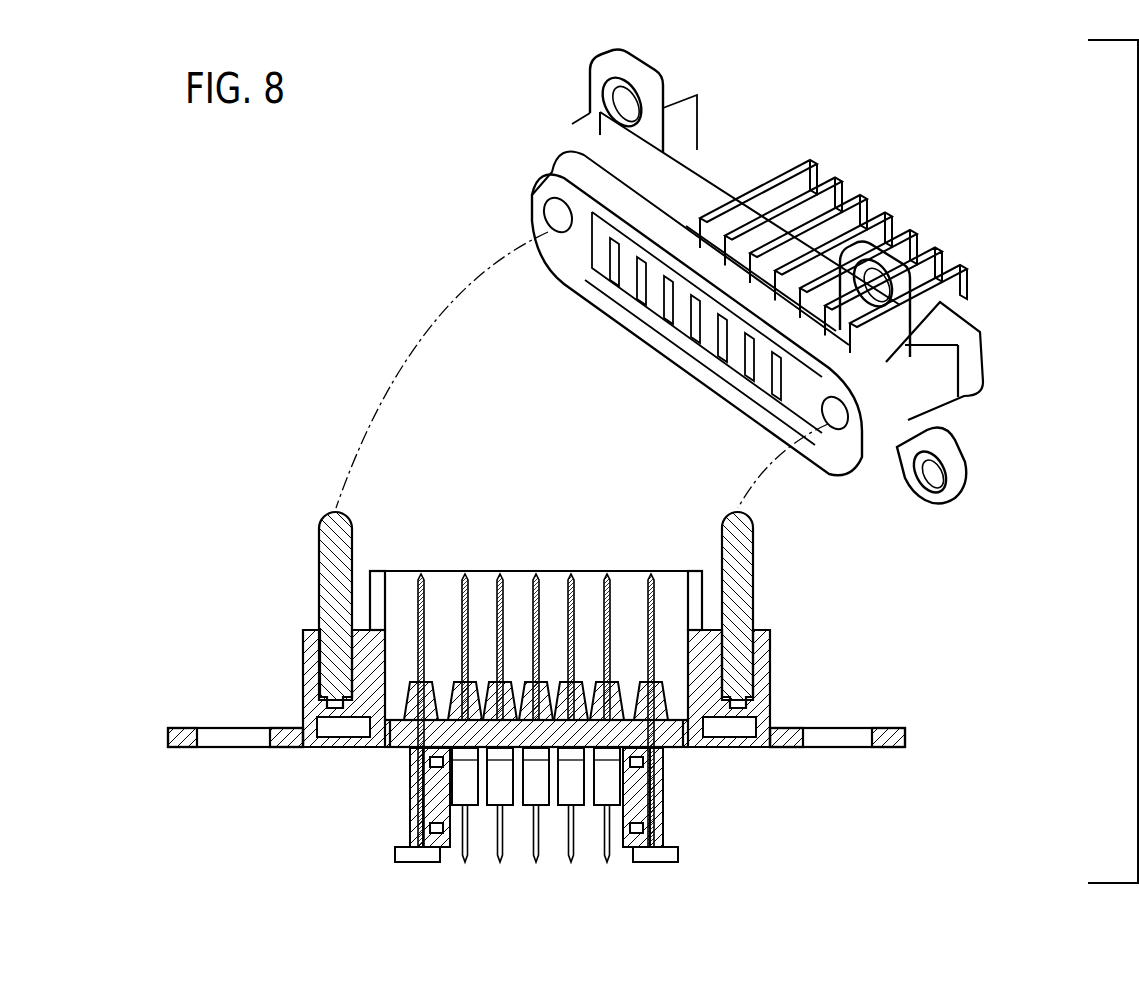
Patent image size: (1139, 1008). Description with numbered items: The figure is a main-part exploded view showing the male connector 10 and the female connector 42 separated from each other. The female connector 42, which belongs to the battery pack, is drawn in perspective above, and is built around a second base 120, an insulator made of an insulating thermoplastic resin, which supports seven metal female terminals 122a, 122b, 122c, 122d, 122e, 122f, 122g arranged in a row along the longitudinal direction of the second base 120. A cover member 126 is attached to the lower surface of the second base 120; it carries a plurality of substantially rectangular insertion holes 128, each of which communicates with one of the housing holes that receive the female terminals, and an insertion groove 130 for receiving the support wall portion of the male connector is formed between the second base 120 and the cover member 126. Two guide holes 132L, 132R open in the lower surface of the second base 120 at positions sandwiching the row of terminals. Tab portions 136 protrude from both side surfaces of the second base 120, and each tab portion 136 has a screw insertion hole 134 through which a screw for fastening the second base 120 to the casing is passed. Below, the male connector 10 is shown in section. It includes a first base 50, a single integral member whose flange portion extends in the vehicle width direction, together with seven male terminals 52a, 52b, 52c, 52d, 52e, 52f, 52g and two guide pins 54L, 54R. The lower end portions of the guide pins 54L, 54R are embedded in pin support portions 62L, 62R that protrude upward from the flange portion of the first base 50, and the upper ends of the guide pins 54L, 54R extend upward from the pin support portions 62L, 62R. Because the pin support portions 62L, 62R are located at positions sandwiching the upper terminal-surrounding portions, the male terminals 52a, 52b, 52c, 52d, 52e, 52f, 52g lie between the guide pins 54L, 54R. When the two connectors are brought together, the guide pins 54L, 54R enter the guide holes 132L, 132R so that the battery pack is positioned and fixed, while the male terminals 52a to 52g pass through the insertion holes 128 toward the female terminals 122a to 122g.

The female connector 42 is at (558, 77).
The screw insertion hole 134 is at (612, 100).
The tab portions 136 is at (652, 90).
The guide hole 132L is at (552, 214).
The guide hole 132R is at (834, 428).
The cover member 126 is at (600, 264).
The insertion groove 130 is at (622, 308).
The insertion holes 128 is at (700, 350).
The second base 120 is at (950, 376).
The female terminal 122a is at (818, 168).
The female terminal 122b is at (843, 184).
The female terminal 122c is at (868, 203).
The female terminal 122d is at (893, 222).
The female terminal 122e is at (918, 240).
The female terminal 122f is at (943, 259).
The female terminal 122g is at (968, 276).
The male connector 10 is at (292, 528).
The first base 50 is at (796, 722).
The guide pin 54L is at (325, 580).
The guide pin 54R is at (745, 570).
The pin support portion 62L is at (310, 667).
The pin support portion 62R is at (768, 660).
The male terminal 52a is at (419, 590).
The male terminal 52b is at (463, 590).
The male terminal 52c is at (498, 590).
The male terminal 52d is at (534, 590).
The male terminal 52e is at (569, 590).
The male terminal 52f is at (605, 590).
The male terminal 52g is at (649, 590).